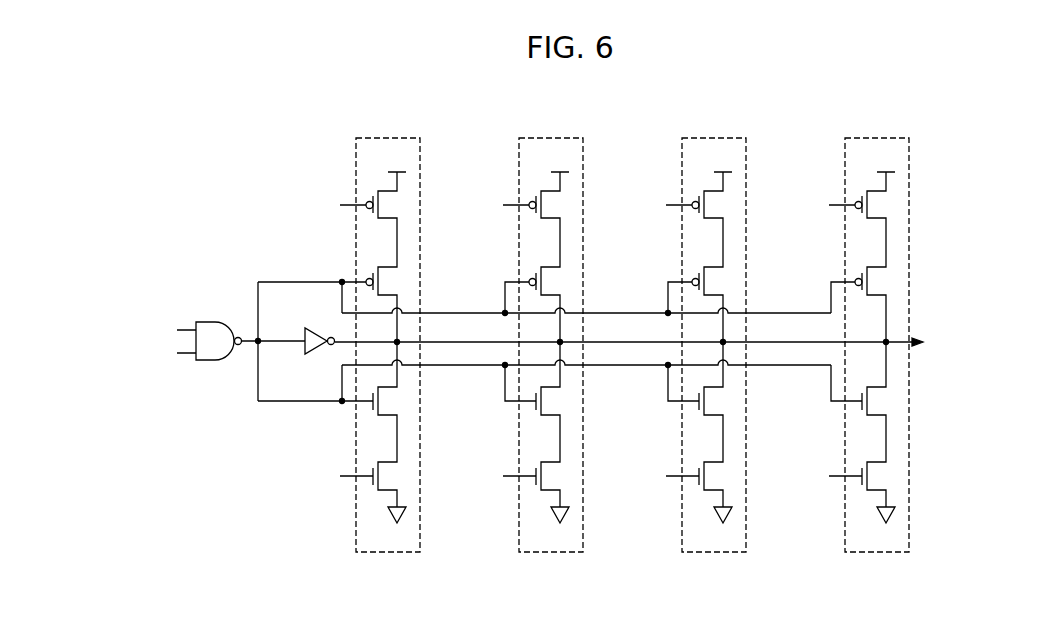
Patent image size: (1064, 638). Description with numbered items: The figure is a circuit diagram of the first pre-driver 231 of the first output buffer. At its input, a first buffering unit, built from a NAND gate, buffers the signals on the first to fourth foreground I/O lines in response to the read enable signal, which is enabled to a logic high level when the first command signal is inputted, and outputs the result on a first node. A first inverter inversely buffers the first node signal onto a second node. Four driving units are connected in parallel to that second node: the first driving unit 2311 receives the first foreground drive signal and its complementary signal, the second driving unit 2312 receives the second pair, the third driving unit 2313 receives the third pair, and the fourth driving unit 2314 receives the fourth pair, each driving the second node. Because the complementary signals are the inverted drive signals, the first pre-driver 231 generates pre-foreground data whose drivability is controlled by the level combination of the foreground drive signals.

The first pre-driver 231 is at (238, 134).
The first driving unit 2311 is at (409, 138).
The second driving unit 2312 is at (520, 328).
The third driving unit 2313 is at (683, 328).
The fourth driving unit 2314 is at (846, 328).